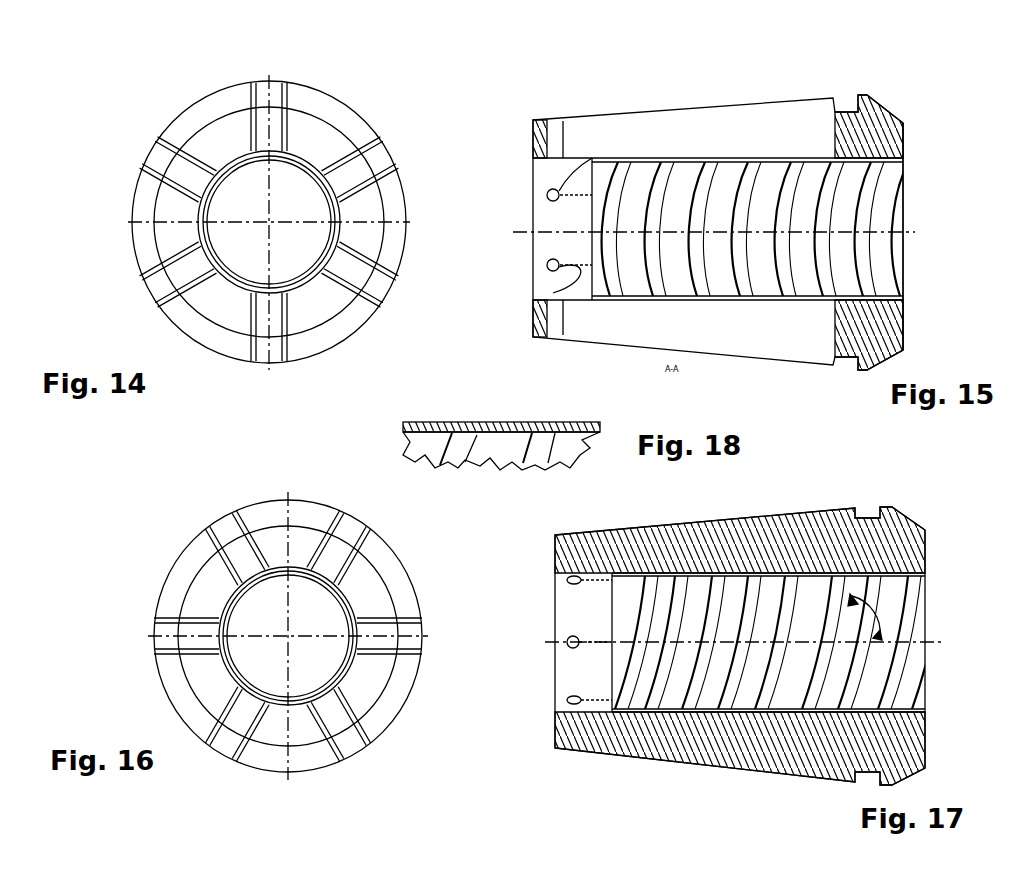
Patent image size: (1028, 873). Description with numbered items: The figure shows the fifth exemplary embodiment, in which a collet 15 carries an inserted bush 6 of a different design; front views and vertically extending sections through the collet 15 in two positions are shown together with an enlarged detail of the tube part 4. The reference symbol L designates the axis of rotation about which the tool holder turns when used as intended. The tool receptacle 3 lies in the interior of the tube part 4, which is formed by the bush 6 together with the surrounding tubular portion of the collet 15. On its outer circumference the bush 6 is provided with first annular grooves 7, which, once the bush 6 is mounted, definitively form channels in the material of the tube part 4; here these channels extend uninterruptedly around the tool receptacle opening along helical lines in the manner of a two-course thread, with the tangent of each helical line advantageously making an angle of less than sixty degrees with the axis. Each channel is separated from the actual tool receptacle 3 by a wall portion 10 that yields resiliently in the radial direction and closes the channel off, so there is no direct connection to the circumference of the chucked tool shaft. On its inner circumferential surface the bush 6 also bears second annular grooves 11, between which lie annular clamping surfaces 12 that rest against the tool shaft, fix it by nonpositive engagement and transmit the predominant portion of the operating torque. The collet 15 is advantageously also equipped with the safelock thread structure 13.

In FIG. 14, the tool receptacle 3 is at (230, 232).
In FIG. 16, the tool receptacle 3 is at (252, 652).
In FIG. 15, the tube part 4 is at (903, 167).
In FIG. 15, the bush 6 is at (902, 303).
In FIG. 17, the bush 6 is at (768, 642).
In FIG. 18, the bush 6 is at (593, 424).
In FIG. 18, the first annular grooves 7 is at (552, 422).
In FIG. 18, the wall portion 10 is at (503, 420).
In FIG. 15, the second annular grooves 11 is at (807, 283).
In FIG. 17, the second annular grooves 11 is at (800, 692).
In FIG. 18, the second annular grooves 11 is at (418, 460).
In FIG. 15, the annular clamping surfaces 12 is at (780, 190).
In FIG. 17, the annular clamping surfaces 12 is at (810, 600).
In FIG. 18, the annular clamping surfaces 12 is at (540, 457).
In FIG. 14, the safelock thread structure 13 is at (305, 177).
In FIG. 16, the safelock thread structure 13 is at (337, 607).
In FIG. 15, the safelock thread structure 13 is at (554, 296).
In FIG. 14, the collet 15 is at (150, 116).
In FIG. 16, the collet 15 is at (288, 636).
In FIG. 15, the collet 15 is at (686, 98).
In FIG. 17, the collet 15 is at (925, 516).
In FIG. 14, the axis of rotation L is at (272, 227).
In FIG. 16, the axis of rotation L is at (292, 640).
In FIG. 15, the axis of rotation L is at (867, 232).
In FIG. 17, the axis of rotation L is at (900, 640).